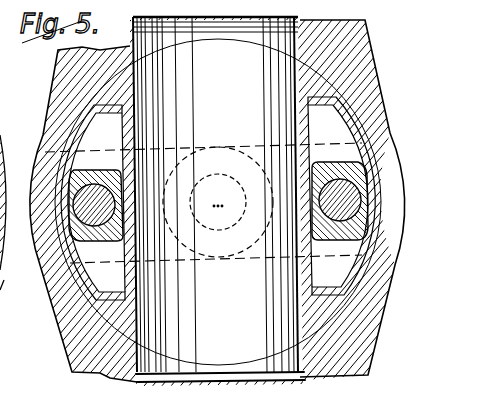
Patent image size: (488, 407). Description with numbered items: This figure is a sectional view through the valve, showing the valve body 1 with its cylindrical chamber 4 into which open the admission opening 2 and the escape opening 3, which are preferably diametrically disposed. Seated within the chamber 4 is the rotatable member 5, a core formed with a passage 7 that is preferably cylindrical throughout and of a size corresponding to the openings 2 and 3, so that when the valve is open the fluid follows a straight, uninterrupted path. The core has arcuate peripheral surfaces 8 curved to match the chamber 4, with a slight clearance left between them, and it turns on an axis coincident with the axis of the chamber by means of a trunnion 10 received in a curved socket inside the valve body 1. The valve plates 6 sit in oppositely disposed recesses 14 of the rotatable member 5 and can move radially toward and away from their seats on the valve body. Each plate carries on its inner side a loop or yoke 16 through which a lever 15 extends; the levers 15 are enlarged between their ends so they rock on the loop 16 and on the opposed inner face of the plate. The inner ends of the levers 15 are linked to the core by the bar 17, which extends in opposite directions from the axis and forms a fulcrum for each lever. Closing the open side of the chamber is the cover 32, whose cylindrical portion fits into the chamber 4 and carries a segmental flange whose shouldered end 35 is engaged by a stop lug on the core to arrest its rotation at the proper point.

The valve body 1 is at (358, 47).
The opening 2 is at (300, 19).
The opening 3 is at (298, 381).
The cylindrical chamber 4 is at (77, 289).
The rotatable member 5 is at (338, 73).
The valve plates 6 is at (58, 152).
The passage 7 is at (304, 324).
The arcuate peripheral surfaces 8 is at (303, 72).
The trunnion 10 is at (221, 228).
The recesses 14 is at (318, 95).
The levers 15 is at (70, 224).
The loop or yoke 16 is at (80, 242).
The bar 17 is at (260, 258).
The cover 32 is at (5, 311).
The shouldered end 35 is at (0, 276).